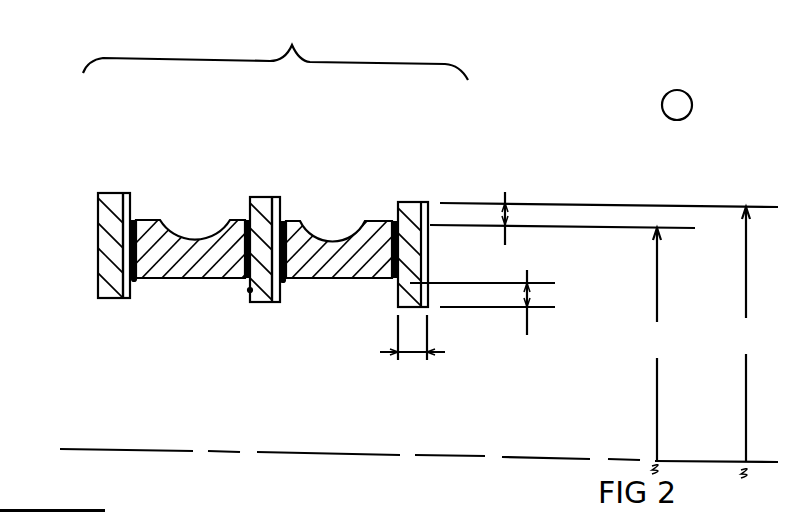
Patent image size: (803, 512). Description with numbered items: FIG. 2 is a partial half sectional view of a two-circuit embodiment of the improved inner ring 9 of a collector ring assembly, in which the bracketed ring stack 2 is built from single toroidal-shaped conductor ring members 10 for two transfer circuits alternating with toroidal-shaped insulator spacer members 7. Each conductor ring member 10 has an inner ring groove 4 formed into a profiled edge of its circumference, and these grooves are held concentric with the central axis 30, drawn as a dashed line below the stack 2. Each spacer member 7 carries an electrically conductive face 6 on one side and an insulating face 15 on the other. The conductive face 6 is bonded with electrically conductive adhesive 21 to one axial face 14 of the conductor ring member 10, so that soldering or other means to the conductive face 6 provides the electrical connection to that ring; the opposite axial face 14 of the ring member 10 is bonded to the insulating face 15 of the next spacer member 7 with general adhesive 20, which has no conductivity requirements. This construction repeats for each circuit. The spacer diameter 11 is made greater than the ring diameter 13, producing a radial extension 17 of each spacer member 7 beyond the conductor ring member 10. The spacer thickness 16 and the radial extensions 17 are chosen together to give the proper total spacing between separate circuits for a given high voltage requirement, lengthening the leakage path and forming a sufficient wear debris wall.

The roller assembly 2 is at (275, 49).
The inner ring grooves 4 is at (170, 232).
The electrically conductive face 6 is at (128, 203).
The spacer member 7 is at (110, 203).
The inner ring 9 is at (677, 105).
The conductor ring member 10 is at (158, 251).
The spacer diameter 11 is at (743, 342).
The ring diameter 13 is at (656, 351).
The axial face 14 is at (160, 280).
The insulating face 15 is at (250, 290).
The spacer thickness 16 is at (431, 342).
The radial extension 17 is at (505, 192).
The general adhesive 20 is at (247, 283).
The electrically conductive adhesive 21 is at (134, 280).
The central axis 30 is at (302, 453).